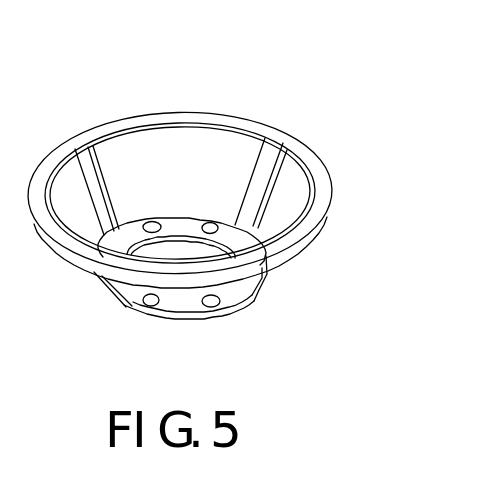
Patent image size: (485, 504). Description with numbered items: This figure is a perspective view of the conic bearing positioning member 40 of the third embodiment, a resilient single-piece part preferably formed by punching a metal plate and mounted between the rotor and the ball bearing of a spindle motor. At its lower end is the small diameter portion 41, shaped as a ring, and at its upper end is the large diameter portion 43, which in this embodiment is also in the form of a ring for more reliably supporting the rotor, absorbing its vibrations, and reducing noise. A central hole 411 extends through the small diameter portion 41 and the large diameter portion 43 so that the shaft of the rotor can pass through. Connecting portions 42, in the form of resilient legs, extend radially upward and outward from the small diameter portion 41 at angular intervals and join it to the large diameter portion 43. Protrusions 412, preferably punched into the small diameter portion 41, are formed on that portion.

The bearing positioning member 40 is at (300, 133).
The small diameter portion 41 is at (207, 215).
The central hole 411 is at (265, 247).
The protrusions 412 is at (210, 304).
The connecting portion 42 is at (98, 183).
The large diameter portion 43 is at (170, 118).